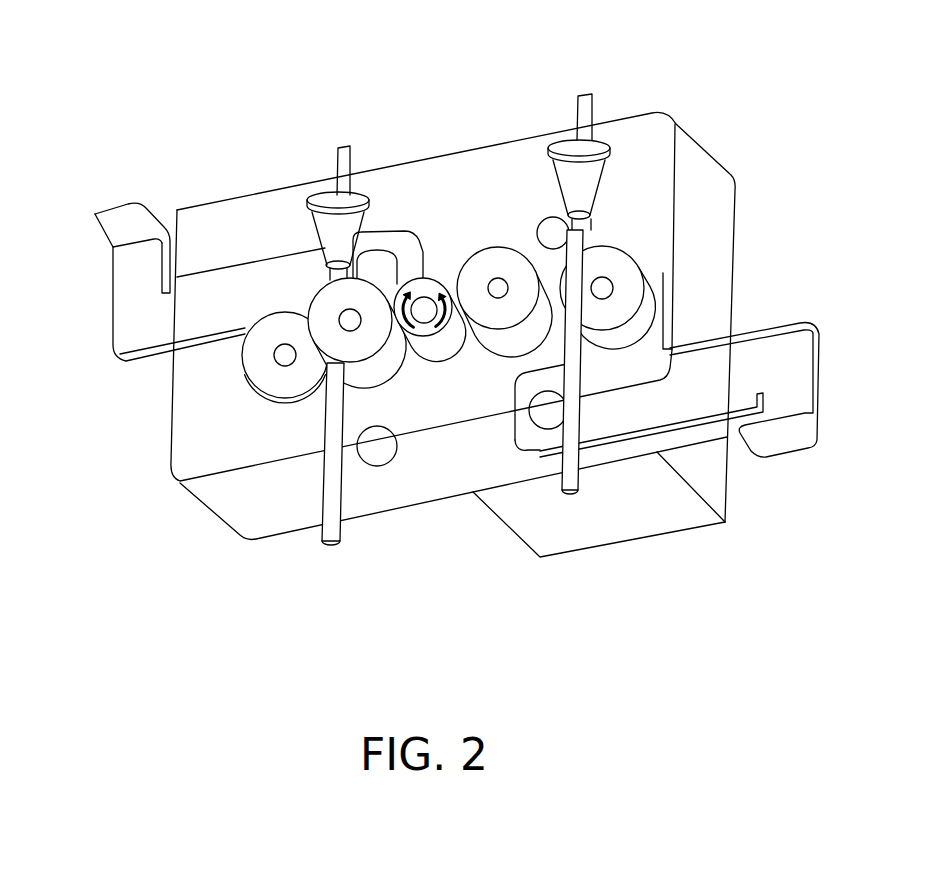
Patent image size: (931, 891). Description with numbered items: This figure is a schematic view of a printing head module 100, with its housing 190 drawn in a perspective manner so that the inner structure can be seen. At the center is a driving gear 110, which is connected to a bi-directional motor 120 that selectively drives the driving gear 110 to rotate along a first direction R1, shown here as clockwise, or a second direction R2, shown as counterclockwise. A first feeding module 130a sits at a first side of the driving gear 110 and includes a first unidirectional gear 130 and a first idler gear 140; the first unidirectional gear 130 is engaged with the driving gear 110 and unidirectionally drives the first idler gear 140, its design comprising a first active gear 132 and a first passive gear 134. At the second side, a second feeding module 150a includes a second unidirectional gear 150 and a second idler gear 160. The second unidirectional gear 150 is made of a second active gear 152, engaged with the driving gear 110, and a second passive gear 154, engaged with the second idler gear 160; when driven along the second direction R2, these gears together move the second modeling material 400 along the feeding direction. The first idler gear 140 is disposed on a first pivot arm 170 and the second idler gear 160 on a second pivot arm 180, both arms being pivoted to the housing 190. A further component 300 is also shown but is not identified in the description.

The printing head module 100 is at (429, 337).
The driving gear 110 is at (442, 257).
The bi-directional motor 120 is at (673, 513).
The first unidirectional gear 130 is at (506, 358).
The first feeding module 130a is at (553, 337).
The first active gear 132 is at (533, 352).
The first passive gear 134 is at (547, 355).
The first idler gear 140 is at (611, 263).
The second unidirectional gear 150 is at (368, 373).
The second feeding module 150a is at (336, 352).
The second active gear 152 is at (367, 372).
The second passive gear 154 is at (393, 383).
The second idler gear 160 is at (288, 330).
The first pivot arm 170 is at (788, 323).
The second pivot arm 180 is at (128, 291).
The housing 190 is at (703, 180).
The first rod 300 is at (570, 455).
The second modeling material 400 is at (330, 496).
The first direction R1 is at (444, 333).
The second direction R2 is at (481, 330).